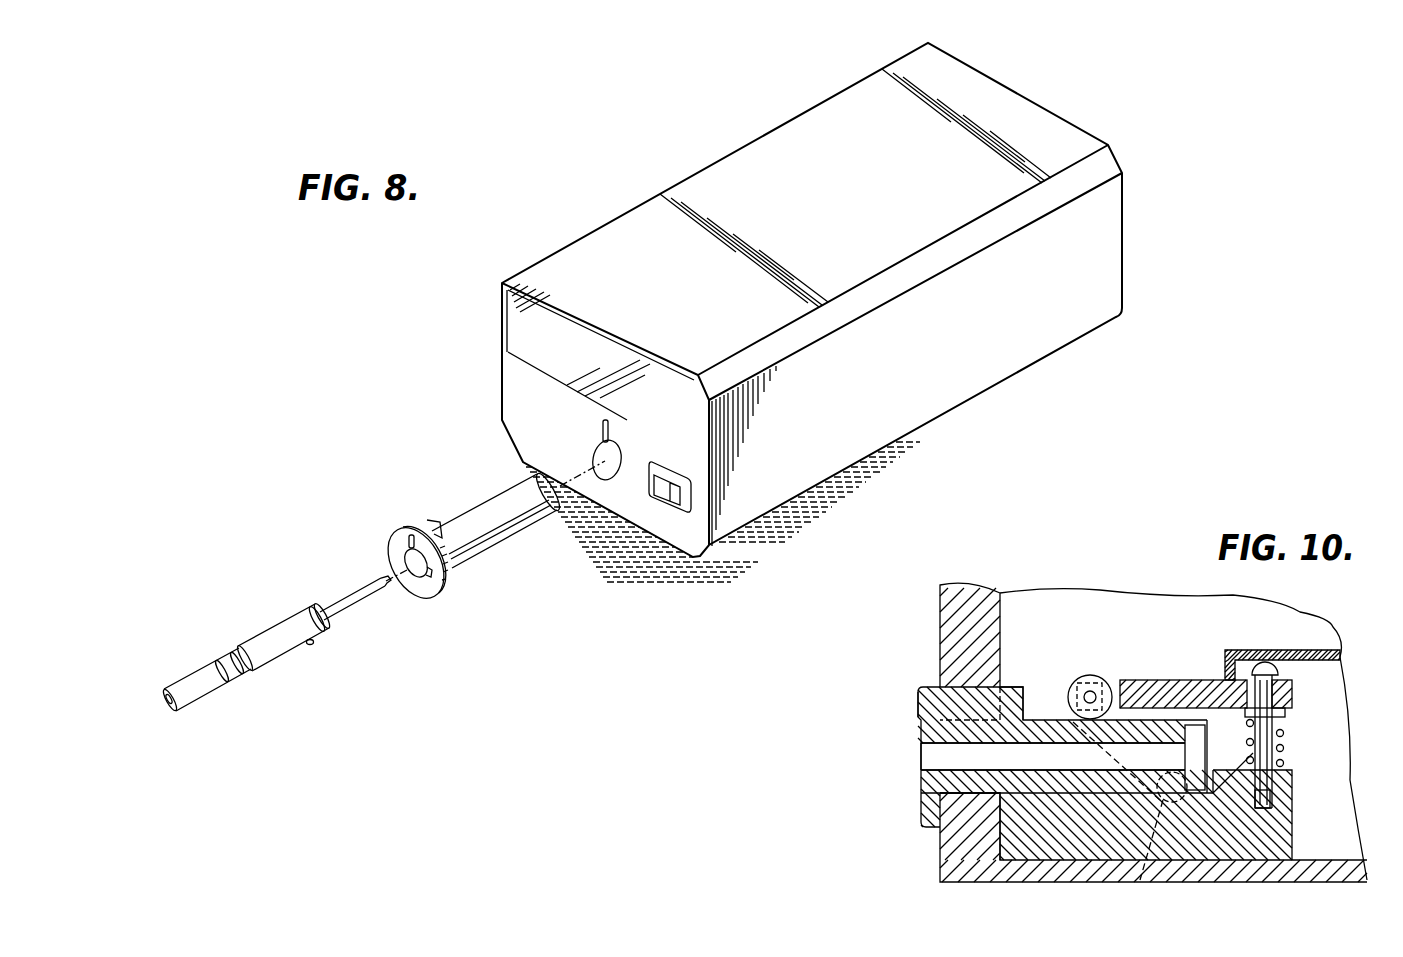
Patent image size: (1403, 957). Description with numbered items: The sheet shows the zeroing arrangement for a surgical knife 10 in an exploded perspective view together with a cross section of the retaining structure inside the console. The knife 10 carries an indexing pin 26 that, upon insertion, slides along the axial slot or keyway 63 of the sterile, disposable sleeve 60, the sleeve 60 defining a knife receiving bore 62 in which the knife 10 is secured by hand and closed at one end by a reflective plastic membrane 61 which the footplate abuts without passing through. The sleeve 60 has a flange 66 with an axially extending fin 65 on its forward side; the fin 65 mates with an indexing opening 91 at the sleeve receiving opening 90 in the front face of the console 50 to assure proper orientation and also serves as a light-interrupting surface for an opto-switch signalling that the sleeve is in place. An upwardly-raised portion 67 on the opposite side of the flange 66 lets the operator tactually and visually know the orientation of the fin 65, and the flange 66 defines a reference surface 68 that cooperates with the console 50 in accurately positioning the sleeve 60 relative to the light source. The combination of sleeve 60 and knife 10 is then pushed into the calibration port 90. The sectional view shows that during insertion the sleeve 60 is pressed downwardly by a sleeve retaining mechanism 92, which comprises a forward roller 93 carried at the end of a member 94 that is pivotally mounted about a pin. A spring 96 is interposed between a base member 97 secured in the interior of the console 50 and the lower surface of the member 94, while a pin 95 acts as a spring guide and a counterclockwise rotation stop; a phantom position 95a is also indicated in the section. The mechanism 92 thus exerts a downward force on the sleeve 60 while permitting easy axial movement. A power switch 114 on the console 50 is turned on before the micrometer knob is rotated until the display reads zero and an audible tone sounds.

In FIG. 8, the knife 10 is at (283, 676).
In FIG. 8, the indexing pin 26 is at (313, 645).
In FIG. 8, the console 50 is at (1038, 306).
In FIG. 10, the console 50 is at (967, 592).
In FIG. 8, the sleeve 60 is at (492, 550).
In FIG. 10, the reflective plastic membrane 61 is at (1207, 757).
In FIG. 10, the knife receiving bore 62 is at (922, 757).
In FIG. 8, the keyway 63 is at (428, 577).
In FIG. 8, the fin 65 is at (433, 521).
In FIG. 10, the fin 65 is at (1010, 687).
In FIG. 8, the flange 66 is at (437, 588).
In FIG. 10, the flange 66 is at (920, 810).
In FIG. 8, the upwardly-raised portion 67 is at (408, 542).
In FIG. 10, the upwardly-raised portion 67 is at (917, 707).
In FIG. 10, the reference surface 68 is at (944, 823).
In FIG. 8, the sleeve receiving opening 90 is at (603, 478).
In FIG. 8, the indexing opening 91 is at (609, 431).
In FIG. 10, the sleeve retaining mechanism 92 is at (1197, 648).
In FIG. 10, the forward roller 93 is at (1087, 677).
In FIG. 10, the member 94 is at (1148, 687).
In FIG. 10, the pin 95 is at (1282, 722).
In FIG. 10, the spring alternate position 95a is at (1130, 816).
In FIG. 10, the spring 96 is at (1282, 763).
In FIG. 10, the base member 97 is at (1275, 823).
In FIG. 8, the power switch 114 is at (678, 512).